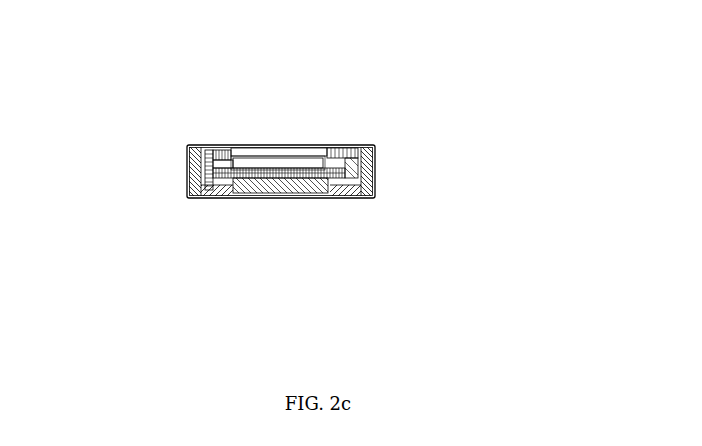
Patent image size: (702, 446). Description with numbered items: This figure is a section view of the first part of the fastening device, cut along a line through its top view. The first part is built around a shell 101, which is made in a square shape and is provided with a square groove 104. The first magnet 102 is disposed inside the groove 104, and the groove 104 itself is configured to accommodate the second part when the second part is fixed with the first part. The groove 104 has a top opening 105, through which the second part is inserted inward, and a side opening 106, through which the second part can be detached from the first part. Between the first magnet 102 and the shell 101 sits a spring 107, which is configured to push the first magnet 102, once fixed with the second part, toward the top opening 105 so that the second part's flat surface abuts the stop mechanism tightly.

The shell 101 is at (364, 176).
The first magnet 102 is at (238, 173).
The groove 104 is at (282, 163).
The top opening 105 is at (291, 150).
The side opening 106 is at (350, 165).
The spring 107 is at (301, 185).